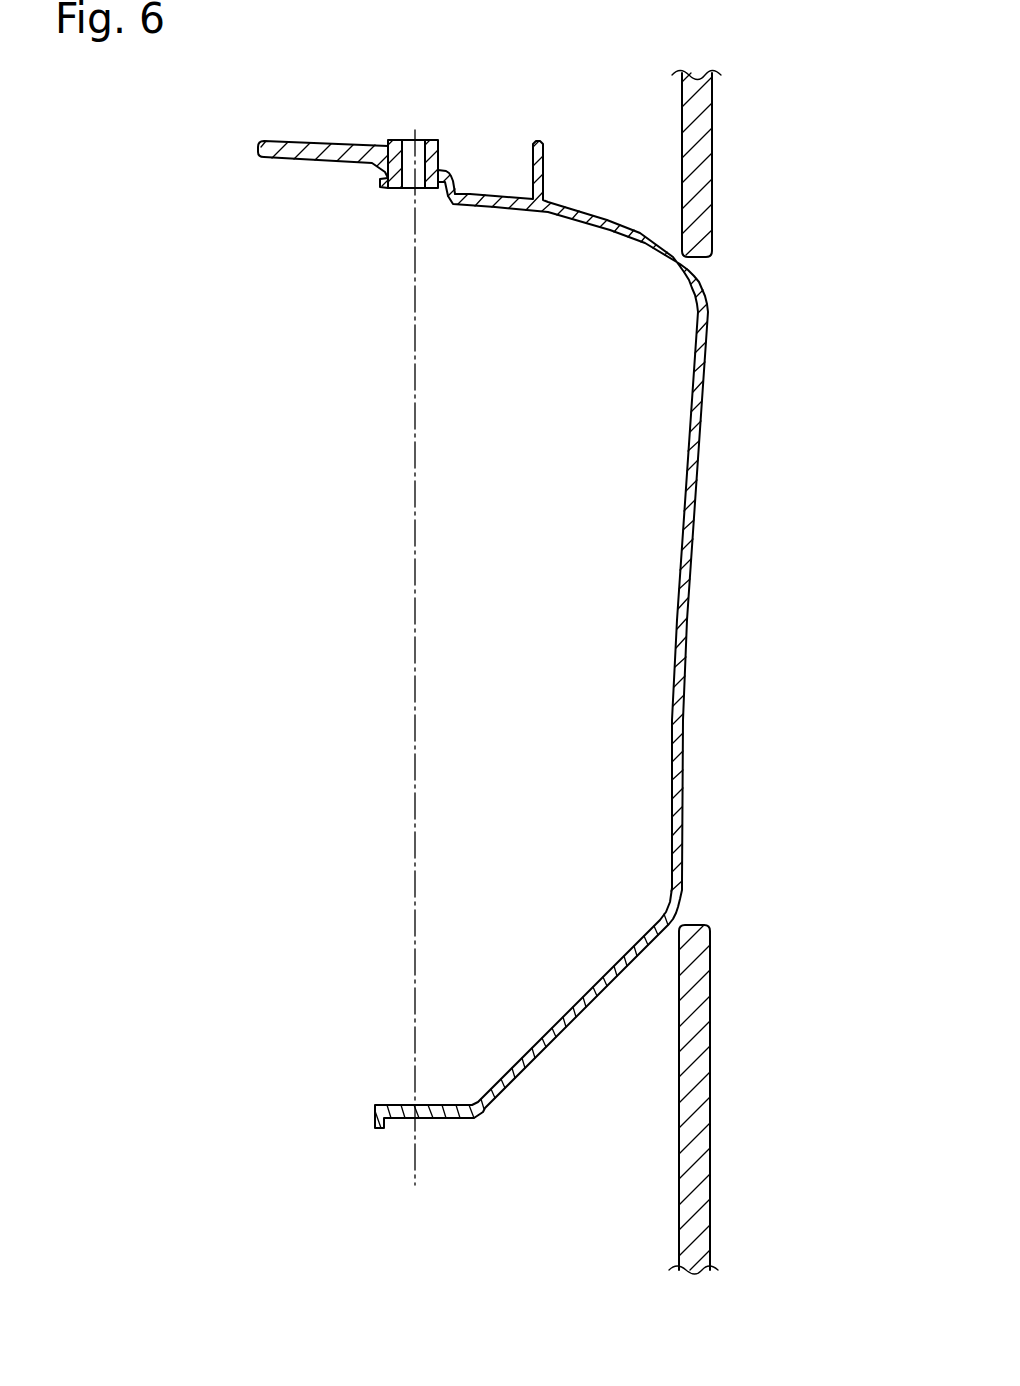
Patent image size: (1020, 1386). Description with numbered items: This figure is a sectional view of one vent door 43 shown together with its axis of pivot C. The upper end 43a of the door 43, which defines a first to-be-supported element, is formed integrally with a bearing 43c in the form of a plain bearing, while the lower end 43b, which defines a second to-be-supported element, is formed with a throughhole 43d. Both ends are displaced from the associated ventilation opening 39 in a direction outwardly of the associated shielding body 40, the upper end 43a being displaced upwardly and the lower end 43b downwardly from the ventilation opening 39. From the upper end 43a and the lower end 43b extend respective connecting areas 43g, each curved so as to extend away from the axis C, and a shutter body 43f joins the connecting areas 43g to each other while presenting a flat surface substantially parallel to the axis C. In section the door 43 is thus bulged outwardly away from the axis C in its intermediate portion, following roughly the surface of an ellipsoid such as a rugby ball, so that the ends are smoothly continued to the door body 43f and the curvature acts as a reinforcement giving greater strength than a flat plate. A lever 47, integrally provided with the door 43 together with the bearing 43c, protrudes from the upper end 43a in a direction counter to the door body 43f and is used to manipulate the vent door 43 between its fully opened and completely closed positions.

The vent door 43 is at (497, 1102).
The upper end 43a is at (454, 186).
The lower end 43b is at (383, 1105).
The bearing 43c is at (388, 187).
The throughhole 43d is at (410, 1120).
The shutter body 43f is at (684, 727).
The connecting area 43g is at (568, 218).
The lever 47 is at (262, 158).
The ventilation opening 39 is at (697, 925).
The shielding body 40 is at (711, 1095).
The axis of pivot C is at (418, 1137).